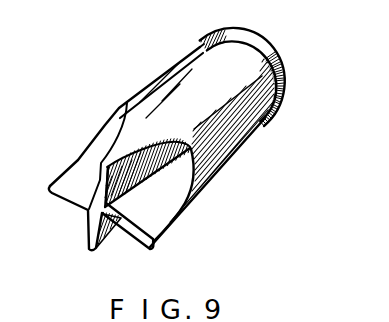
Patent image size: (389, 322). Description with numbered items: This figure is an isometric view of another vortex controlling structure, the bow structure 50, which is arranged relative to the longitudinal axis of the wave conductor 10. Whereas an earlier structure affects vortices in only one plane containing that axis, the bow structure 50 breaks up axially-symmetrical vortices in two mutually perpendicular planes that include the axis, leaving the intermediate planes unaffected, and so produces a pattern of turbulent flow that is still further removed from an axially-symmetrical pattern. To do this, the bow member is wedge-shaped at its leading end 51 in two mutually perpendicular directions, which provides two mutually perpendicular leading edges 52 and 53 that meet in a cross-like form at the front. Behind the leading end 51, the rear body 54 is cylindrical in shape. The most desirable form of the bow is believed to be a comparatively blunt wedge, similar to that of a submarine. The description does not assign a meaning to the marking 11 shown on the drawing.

The wave conductor 10 is at (278, 57).
The end cap ring 11 is at (285, 92).
The bow structure 50 is at (144, 78).
The leading end 51 is at (184, 213).
The leading edge 52 is at (124, 232).
The leading edge 53 is at (96, 190).
The rear body 54 is at (250, 143).